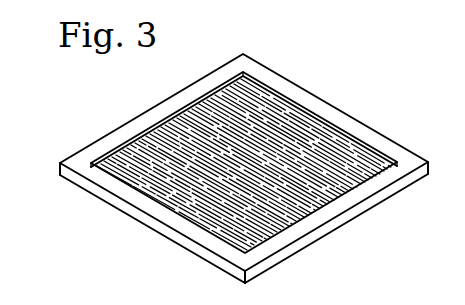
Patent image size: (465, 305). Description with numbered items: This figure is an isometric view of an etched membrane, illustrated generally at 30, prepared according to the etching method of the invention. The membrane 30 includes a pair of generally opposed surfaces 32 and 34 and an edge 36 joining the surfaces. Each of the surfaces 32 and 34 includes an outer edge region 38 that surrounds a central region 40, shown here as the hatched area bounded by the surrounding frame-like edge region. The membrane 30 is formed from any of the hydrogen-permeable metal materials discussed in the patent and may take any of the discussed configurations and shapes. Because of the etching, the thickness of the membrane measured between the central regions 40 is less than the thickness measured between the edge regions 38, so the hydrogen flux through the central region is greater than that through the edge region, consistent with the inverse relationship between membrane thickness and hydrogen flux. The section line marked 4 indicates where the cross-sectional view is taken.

The etched membrane 30 is at (322, 55).
The surface 32 is at (404, 153).
The surface 34 is at (384, 203).
The edge 36 is at (429, 167).
The outer edge region 38 is at (355, 121).
The central region 40 is at (270, 135).
The section line 4- 4 is at (76, 153).